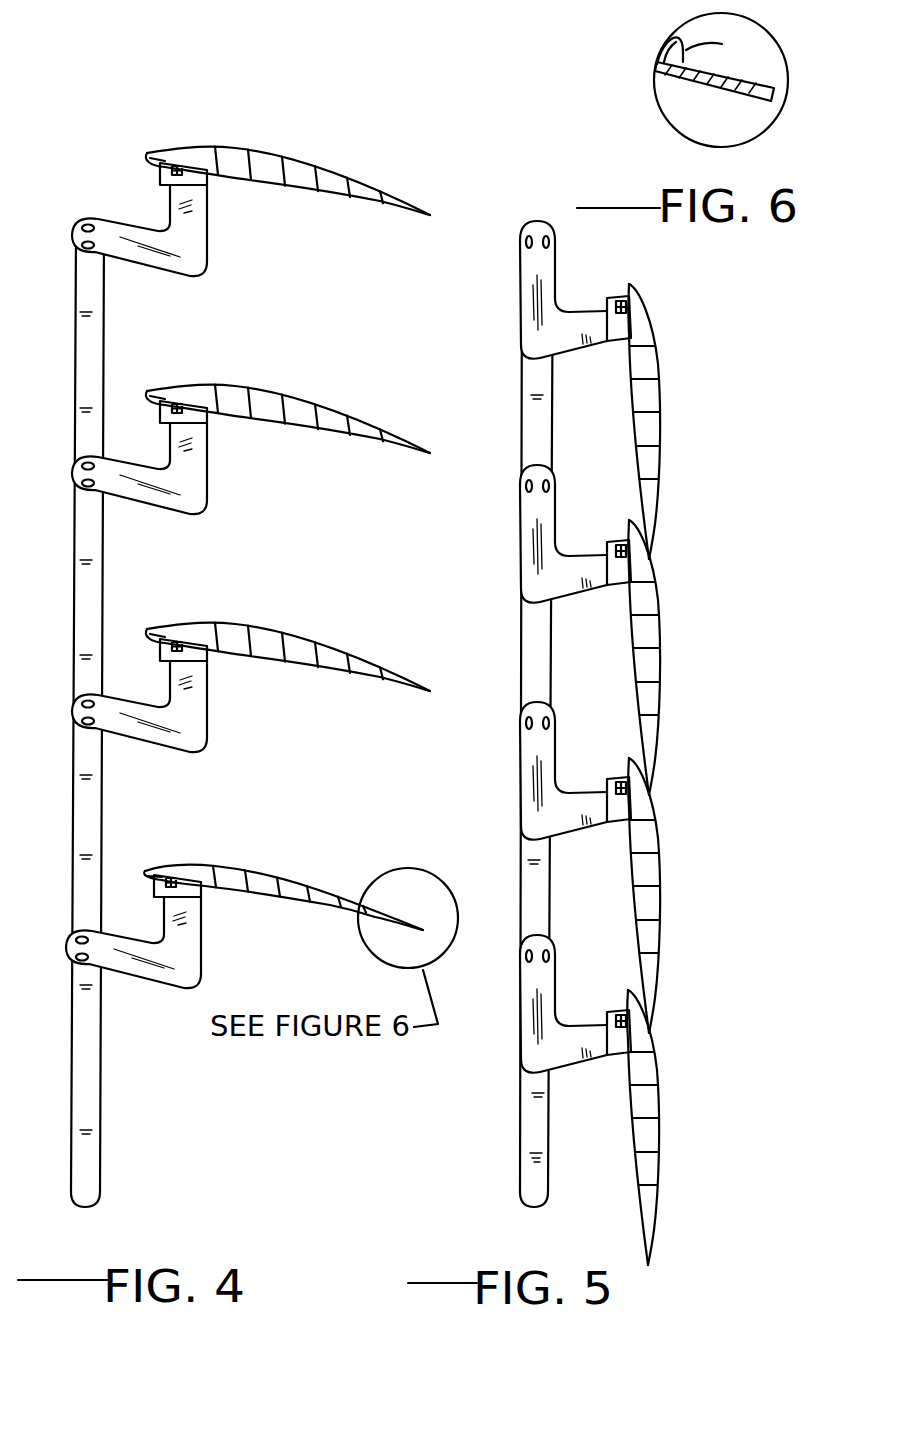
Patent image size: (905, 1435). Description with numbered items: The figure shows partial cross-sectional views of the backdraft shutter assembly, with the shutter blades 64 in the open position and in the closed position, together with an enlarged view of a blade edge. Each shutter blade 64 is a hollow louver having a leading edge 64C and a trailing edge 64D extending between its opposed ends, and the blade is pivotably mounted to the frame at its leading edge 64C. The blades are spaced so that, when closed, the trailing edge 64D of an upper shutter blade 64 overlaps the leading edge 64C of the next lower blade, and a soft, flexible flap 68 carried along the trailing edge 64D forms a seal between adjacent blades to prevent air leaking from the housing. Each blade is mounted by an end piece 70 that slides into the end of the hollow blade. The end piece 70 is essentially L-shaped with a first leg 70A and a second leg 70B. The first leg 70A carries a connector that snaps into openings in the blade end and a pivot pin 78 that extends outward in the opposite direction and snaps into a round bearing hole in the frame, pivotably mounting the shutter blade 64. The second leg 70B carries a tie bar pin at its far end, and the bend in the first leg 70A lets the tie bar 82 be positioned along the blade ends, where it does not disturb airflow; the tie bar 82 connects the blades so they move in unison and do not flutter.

In FIG. 4, the shutter blade 64 is at (263, 388).
In FIG. 5, the shutter blade 64 is at (659, 393).
In FIG. 6, the shutter blade 64 is at (670, 36).
In FIG. 4, the leading edge 64C is at (143, 390).
In FIG. 5, the leading edge 64C is at (634, 291).
In FIG. 4, the trailing edge 64D is at (370, 436).
In FIG. 5, the trailing edge 64D is at (652, 528).
In FIG. 6, the trailing edge 64D is at (722, 44).
In FIG. 4, the flexible flap 68 is at (417, 452).
In FIG. 5, the flexible flap 68 is at (652, 553).
In FIG. 6, the flexible flap 68 is at (742, 78).
In FIG. 4, the end piece 70 is at (187, 734).
In FIG. 5, the end piece 70 is at (548, 762).
In FIG. 4, the first leg 70A is at (192, 677).
In FIG. 5, the first leg 70A is at (593, 812).
In FIG. 4, the second leg 70B is at (130, 722).
In FIG. 5, the second leg 70B is at (523, 722).
In FIG. 4, the pivot pin 78 is at (197, 893).
In FIG. 5, the pivot pin 78 is at (614, 1004).
In FIG. 4, the tie bar 82 is at (68, 1108).
In FIG. 5, the tie bar 82 is at (520, 1131).